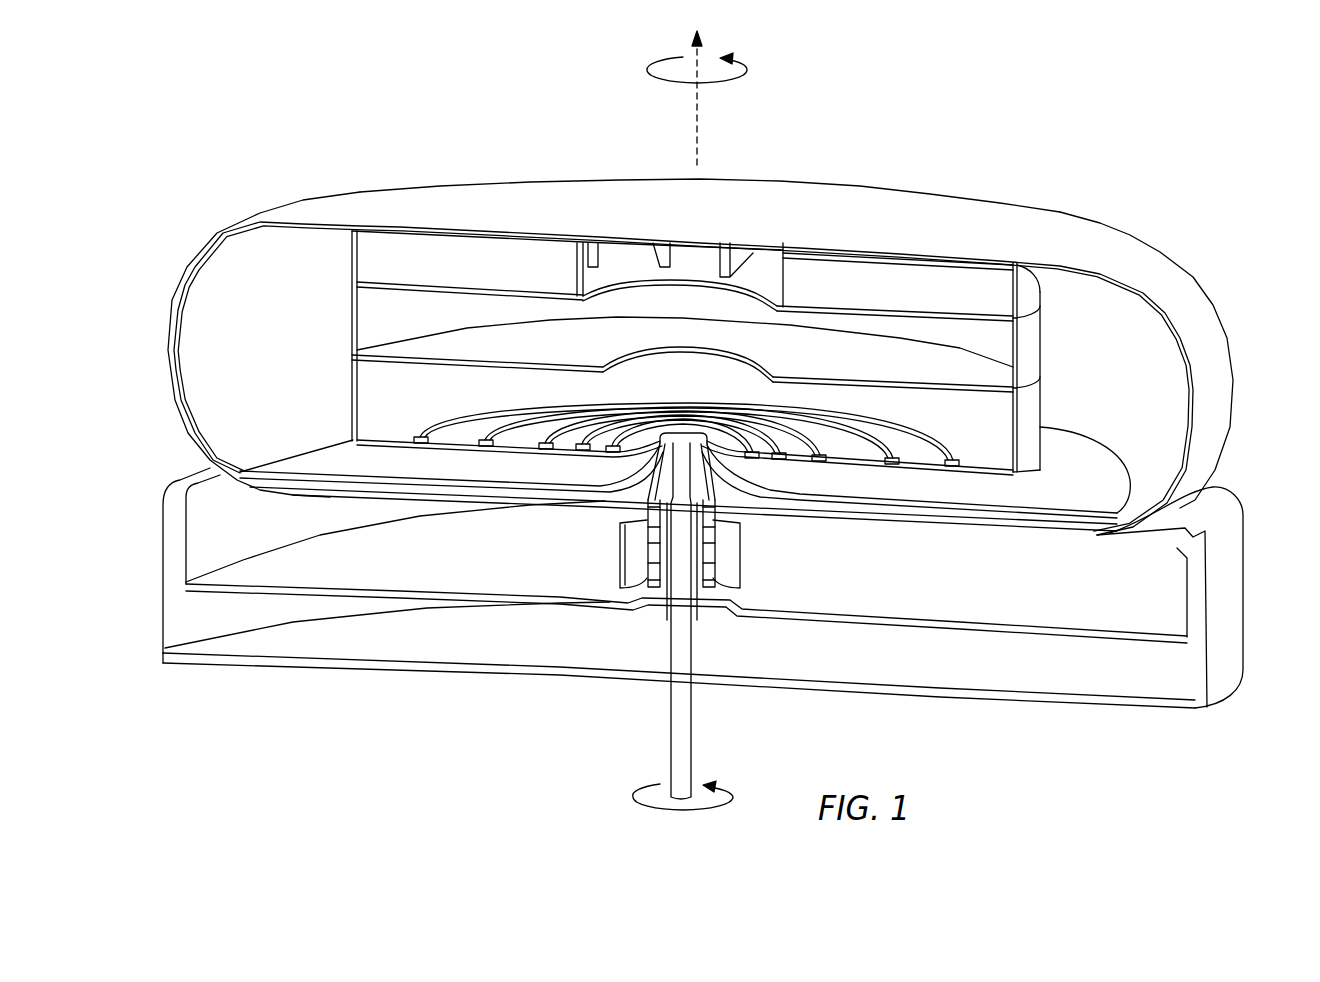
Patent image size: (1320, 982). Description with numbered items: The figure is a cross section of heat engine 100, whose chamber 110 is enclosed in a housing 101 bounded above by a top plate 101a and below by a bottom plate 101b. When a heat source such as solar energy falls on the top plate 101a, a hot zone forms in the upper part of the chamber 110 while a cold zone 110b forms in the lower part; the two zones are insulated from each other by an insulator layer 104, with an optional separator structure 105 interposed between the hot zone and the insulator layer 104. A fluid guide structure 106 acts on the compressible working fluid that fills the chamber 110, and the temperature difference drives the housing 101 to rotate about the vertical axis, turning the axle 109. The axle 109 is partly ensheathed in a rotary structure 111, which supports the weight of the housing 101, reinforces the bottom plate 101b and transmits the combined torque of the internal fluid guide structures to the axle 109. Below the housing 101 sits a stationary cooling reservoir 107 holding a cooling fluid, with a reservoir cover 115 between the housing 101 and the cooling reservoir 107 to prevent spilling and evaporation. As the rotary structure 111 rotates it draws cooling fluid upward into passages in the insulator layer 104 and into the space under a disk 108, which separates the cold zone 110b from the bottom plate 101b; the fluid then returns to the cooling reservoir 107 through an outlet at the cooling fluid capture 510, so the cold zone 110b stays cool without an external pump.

The heat engine 100 is at (699, 420).
The housing 101 is at (1128, 236).
The top plate 101a is at (878, 208).
The bottom plate 101b is at (953, 523).
The insulator layer 104 is at (352, 383).
The separator structure 105 is at (378, 307).
The fluid guide structure 106 is at (470, 253).
The cooling reservoir 107 is at (192, 614).
The disk 108 is at (394, 468).
The axle 109 is at (678, 731).
The chamber 110 is at (255, 346).
The cold zone 110b is at (340, 463).
The rotary structure 111 is at (760, 568).
The reservoir cover 115 is at (435, 573).
The cooling fluid capture 510 is at (173, 556).